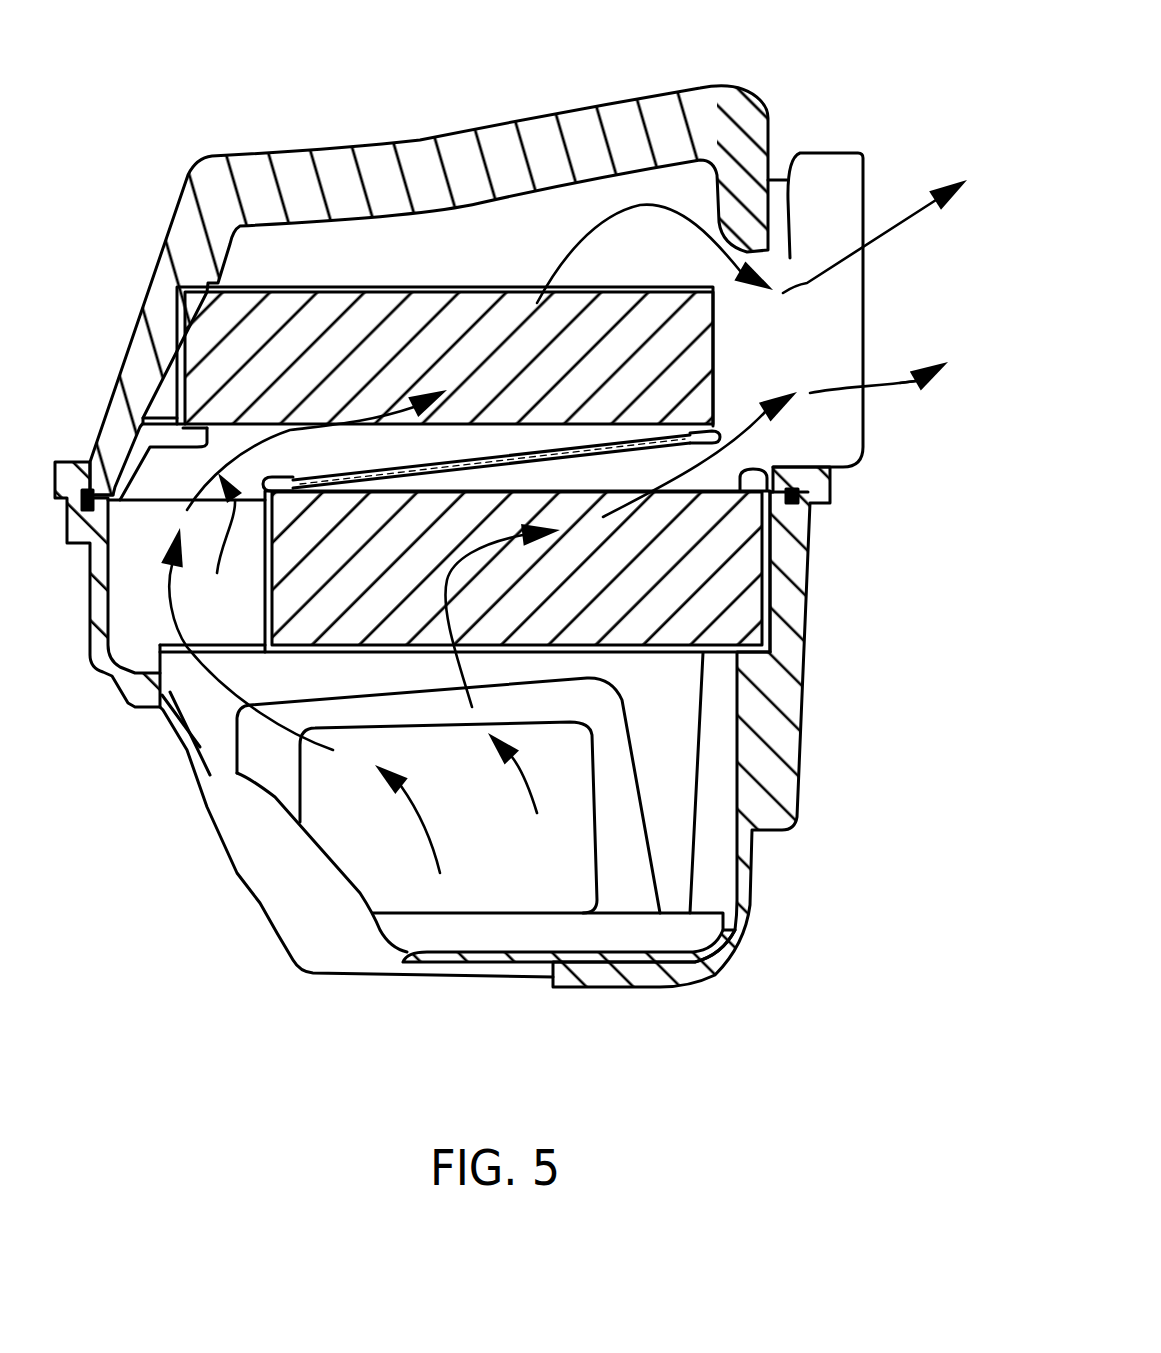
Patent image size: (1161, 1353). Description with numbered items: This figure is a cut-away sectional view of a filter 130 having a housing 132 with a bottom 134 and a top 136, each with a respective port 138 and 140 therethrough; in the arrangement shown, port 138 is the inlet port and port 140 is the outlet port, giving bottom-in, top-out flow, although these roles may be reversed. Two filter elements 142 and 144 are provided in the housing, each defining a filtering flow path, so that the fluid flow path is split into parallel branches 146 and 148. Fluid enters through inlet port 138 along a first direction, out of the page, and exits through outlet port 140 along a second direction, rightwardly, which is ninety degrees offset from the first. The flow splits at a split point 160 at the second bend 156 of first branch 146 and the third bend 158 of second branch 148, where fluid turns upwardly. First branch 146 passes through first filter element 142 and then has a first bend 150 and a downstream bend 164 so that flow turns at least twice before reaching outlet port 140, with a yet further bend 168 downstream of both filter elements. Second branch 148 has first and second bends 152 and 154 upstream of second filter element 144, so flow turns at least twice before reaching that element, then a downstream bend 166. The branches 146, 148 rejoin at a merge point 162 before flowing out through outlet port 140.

The filter 130 is at (804, 974).
The housing 132 is at (188, 750).
The bottom 134 is at (262, 903).
The top 136 is at (763, 98).
The port 138 is at (478, 880).
The port 140 is at (865, 180).
The first filter element 142 is at (732, 585).
The second filter element 144 is at (193, 342).
The first branch 146 is at (887, 387).
The second branch 148 is at (912, 212).
The first bend 150 is at (683, 463).
The first bend 152 is at (247, 611).
The second bend 154 is at (287, 432).
The second bend 156 is at (533, 805).
The third bend 158 is at (433, 858).
The split point 160 is at (490, 812).
The merge point 162 is at (790, 356).
The downstream bend 164 is at (763, 433).
The downstream bend 166 is at (580, 232).
The further bend 168 is at (837, 383).